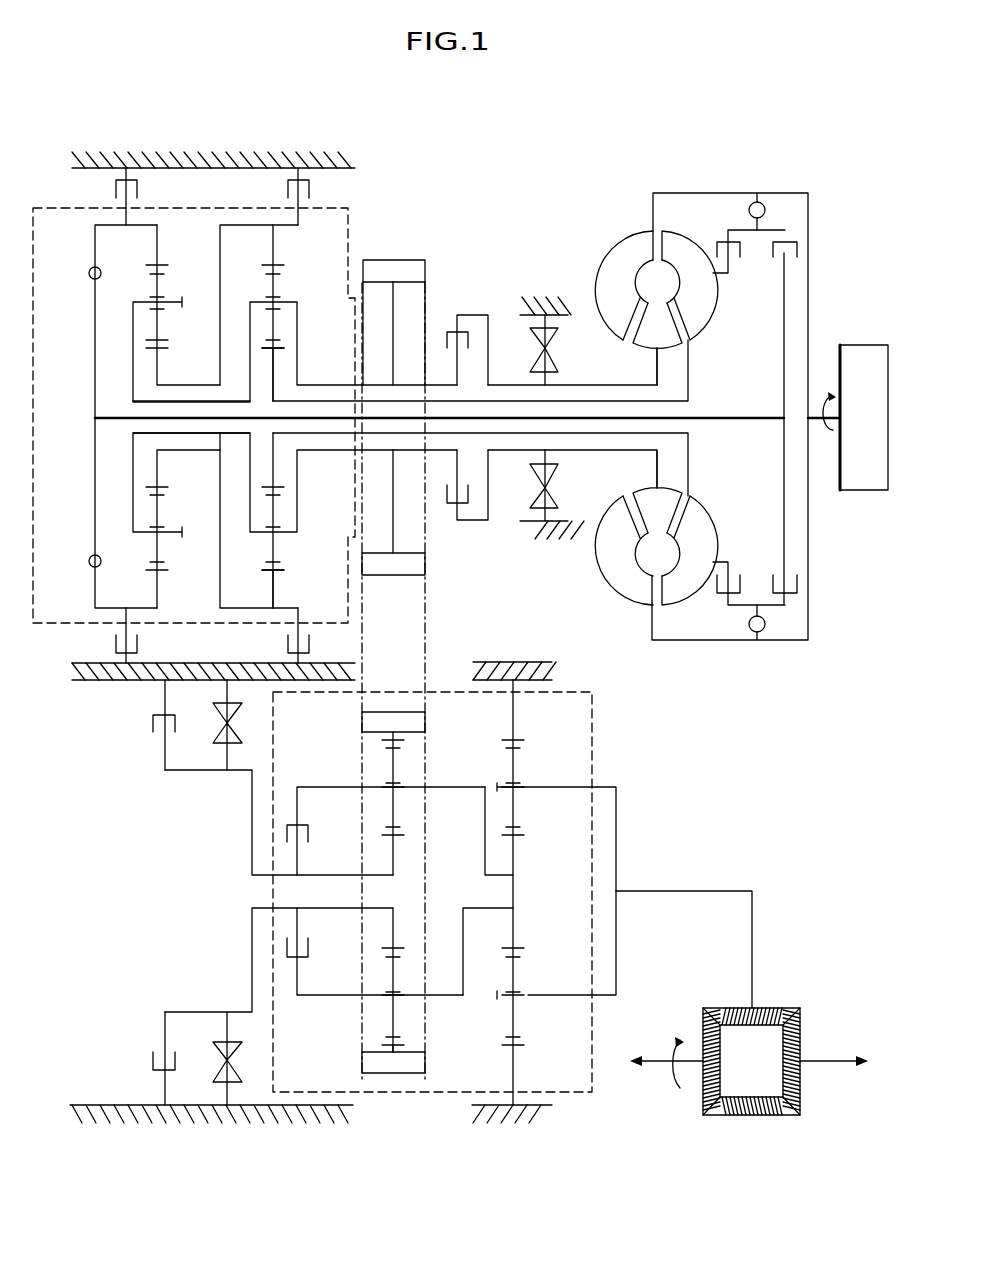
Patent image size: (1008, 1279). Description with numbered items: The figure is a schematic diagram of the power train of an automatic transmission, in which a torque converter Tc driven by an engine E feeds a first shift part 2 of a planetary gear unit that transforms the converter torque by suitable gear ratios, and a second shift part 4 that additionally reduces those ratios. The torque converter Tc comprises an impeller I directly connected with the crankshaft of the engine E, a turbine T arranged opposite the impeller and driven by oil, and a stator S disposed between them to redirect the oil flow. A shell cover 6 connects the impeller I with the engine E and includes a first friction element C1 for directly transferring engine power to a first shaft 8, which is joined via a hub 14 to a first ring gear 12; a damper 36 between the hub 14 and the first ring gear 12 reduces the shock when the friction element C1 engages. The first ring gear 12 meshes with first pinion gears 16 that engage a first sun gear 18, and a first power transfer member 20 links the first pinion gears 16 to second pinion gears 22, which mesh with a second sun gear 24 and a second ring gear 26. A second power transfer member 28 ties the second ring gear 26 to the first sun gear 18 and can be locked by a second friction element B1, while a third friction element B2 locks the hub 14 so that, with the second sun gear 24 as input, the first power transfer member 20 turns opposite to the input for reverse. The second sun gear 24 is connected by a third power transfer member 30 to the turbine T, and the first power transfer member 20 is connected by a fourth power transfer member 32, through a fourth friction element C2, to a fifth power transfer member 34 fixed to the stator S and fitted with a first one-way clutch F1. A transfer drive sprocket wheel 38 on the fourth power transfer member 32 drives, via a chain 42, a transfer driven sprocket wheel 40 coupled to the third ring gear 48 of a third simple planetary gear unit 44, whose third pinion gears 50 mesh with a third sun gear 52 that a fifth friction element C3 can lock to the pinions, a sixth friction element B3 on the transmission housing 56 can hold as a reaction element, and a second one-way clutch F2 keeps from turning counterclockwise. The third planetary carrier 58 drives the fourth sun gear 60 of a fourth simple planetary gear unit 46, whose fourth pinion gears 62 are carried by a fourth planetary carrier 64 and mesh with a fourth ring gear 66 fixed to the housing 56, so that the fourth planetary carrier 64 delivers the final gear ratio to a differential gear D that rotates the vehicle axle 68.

The first shift part 2 is at (358, 240).
The second shift part 4 is at (605, 726).
The shell cover 6 is at (737, 193).
The first shaft 8 is at (743, 417).
The first ring gear 12 is at (153, 265).
The hub 14 is at (95, 345).
The first pinion gears 16 is at (160, 340).
The first sun gear 18 is at (160, 348).
The first power transfer member 20 is at (148, 401).
The second pinion gears 22 is at (280, 274).
The second sun gear 24 is at (273, 368).
The second ring gear 26 is at (270, 265).
The second power transfer member 28 is at (220, 248).
The third power transfer member 30 is at (473, 400).
The fourth power transfer member 32 is at (297, 322).
The fifth power transfer member 34 is at (512, 382).
The damper 36 is at (89, 273).
The transfer drive sprocket wheel 38 is at (417, 272).
The transfer driven sprocket wheel 40 is at (417, 722).
The chain 42 is at (427, 543).
The third simple planetary gear unit 44 is at (410, 1011).
The fourth simple planetary gear unit 46 is at (531, 1031).
The third ring gear 48 is at (385, 740).
The third pinion gears 50 is at (395, 765).
The third sun gear 52 is at (400, 837).
The transmission housing 56 is at (220, 166).
The third planetary carrier 58 is at (485, 812).
The fourth sun gear 60 is at (522, 837).
The fourth pinion gears 62 is at (517, 770).
The fourth planetary carrier 64 is at (752, 927).
The fourth ring gear 66 is at (522, 740).
The vehicle axle 68 is at (832, 1058).
The second friction element B1 is at (317, 415).
The third friction element B2 is at (146, 415).
The sixth friction element B3 is at (148, 892).
The first friction element C1 is at (755, 417).
The fourth friction element C2 is at (459, 417).
The fifth friction element C3 is at (386, 891).
The first one-way clutch F1 is at (556, 418).
The second one-way clutch F2 is at (244, 892).
The torque converter Tc is at (697, 388).
The impeller I is at (615, 265).
The turbine T is at (707, 298).
The stator S is at (643, 340).
The engine E is at (855, 417).
The differential gear D is at (807, 993).